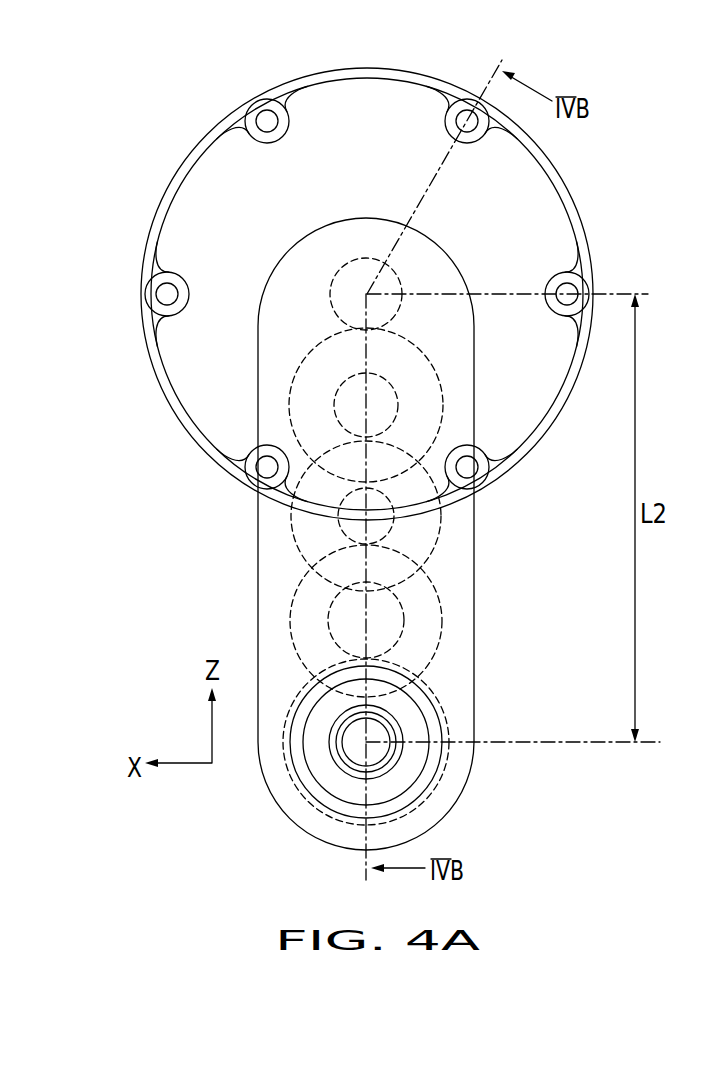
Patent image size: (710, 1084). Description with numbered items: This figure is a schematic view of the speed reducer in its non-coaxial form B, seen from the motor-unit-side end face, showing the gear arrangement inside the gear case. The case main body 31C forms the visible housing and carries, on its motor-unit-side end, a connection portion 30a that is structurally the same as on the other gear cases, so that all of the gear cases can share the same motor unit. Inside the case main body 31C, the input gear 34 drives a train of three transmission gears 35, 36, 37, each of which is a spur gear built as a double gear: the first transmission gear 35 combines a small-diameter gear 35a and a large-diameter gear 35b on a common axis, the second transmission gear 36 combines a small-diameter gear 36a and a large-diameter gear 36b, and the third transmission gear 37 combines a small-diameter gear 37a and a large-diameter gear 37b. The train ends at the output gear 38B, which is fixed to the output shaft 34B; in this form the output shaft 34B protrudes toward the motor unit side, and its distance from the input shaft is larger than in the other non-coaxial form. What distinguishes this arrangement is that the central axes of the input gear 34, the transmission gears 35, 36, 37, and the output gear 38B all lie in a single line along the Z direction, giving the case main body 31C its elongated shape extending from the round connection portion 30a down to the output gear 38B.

The connection portion 30a is at (573, 212).
The case main body 31C is at (582, 166).
The input gear 34 is at (357, 261).
The output shaft 34B is at (350, 773).
The transmission gear 35 is at (377, 356).
The small-diameter gear 35a is at (393, 380).
The large-diameter gear 35b is at (445, 404).
The transmission gear 36 is at (367, 525).
The small-diameter gear 36a is at (398, 528).
The large-diameter gear 36b is at (292, 519).
The transmission gear 37 is at (372, 621).
The small-diameter gear 37a is at (404, 608).
The large-diameter gear 37b is at (290, 623).
The output gear 38B is at (447, 786).